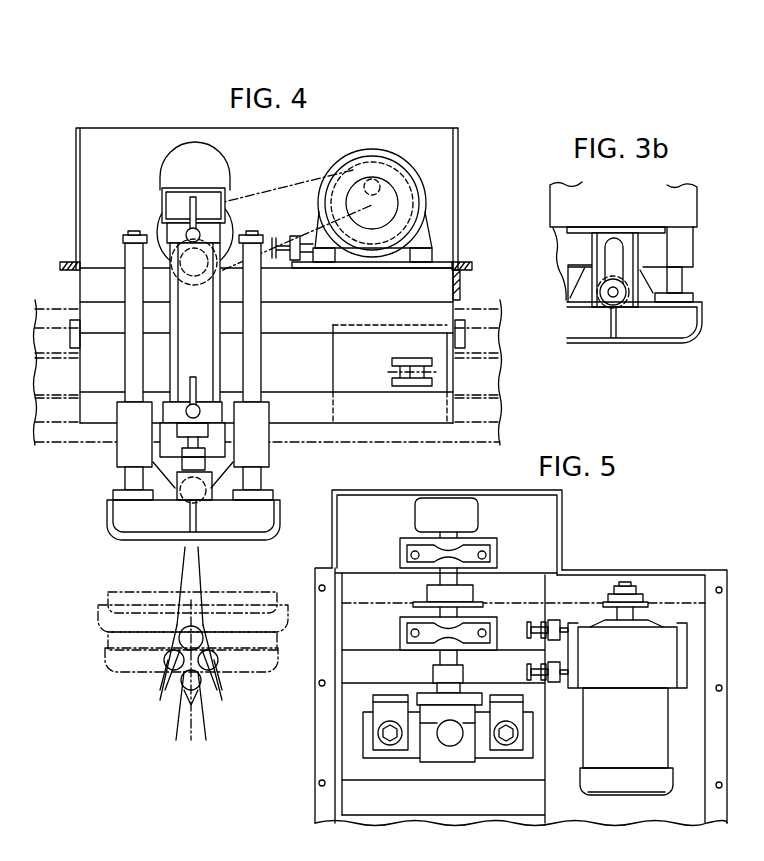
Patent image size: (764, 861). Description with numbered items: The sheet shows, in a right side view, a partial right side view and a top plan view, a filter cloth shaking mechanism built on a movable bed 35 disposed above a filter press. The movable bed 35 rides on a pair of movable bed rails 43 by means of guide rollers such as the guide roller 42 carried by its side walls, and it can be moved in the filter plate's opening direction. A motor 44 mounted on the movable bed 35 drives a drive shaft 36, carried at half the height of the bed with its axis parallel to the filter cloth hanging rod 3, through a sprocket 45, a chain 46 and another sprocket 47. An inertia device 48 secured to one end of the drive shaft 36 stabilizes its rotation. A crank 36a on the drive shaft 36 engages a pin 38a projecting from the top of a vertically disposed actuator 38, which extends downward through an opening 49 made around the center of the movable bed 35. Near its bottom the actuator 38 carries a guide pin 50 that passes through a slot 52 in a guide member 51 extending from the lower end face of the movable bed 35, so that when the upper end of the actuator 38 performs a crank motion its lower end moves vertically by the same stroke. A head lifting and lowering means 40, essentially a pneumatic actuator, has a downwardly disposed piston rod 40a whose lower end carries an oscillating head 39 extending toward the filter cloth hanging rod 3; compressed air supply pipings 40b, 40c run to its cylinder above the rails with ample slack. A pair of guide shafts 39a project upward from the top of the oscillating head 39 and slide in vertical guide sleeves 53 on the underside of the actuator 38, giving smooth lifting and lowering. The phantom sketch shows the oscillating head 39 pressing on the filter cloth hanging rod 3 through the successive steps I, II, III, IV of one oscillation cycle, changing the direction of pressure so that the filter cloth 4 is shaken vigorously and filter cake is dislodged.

In FIG. 4, the movable bed 35 is at (72, 163).
In FIG. 5, the movable bed 35 is at (316, 695).
In FIG. 5, the drive shaft 36 is at (497, 573).
In FIG. 4, the crank 36a is at (167, 212).
In FIG. 5, the crank 36a is at (459, 672).
In FIG. 4, the actuator 38 is at (222, 380).
In FIG. 3B, the actuator 38 is at (686, 258).
In FIG. 5, the actuator 38 is at (422, 693).
In FIG. 4, the pin 38a is at (218, 281).
In FIG. 4, the oscillating head 39 is at (108, 510).
In FIG. 3B, the oscillating head 39 is at (691, 336).
In FIG. 5, the oscillating head 39 is at (363, 730).
In FIG. 4, the guide shafts 39a is at (136, 350).
In FIG. 3B, the guide shafts 39a is at (677, 285).
In FIG. 4, the head lifting and lowering means 40 is at (205, 320).
In FIG. 4, the piston rod 40a is at (205, 450).
In FIG. 4, the compressed air supply piping 40b is at (200, 211).
In FIG. 4, the compressed air supply piping 40c is at (184, 390).
In FIG. 4, the guide roller 42 is at (405, 380).
In FIG. 4, the movable bed rails 43 is at (66, 303).
In FIG. 4, the motor 44 is at (422, 186).
In FIG. 5, the motor 44 is at (653, 729).
In FIG. 4, the sprocket 45 is at (397, 169).
In FIG. 5, the sprocket 45 is at (647, 600).
In FIG. 4, the chain 46 is at (276, 188).
In FIG. 5, the chain 46 is at (570, 603).
In FIG. 4, the sprocket 47 is at (158, 240).
In FIG. 5, the sprocket 47 is at (420, 598).
In FIG. 4, the inertia device 48 is at (168, 165).
In FIG. 5, the inertia device 48 is at (478, 514).
In FIG. 4, the opening 49 is at (97, 273).
In FIG. 5, the opening 49 is at (348, 760).
In FIG. 3B, the guide pin 50 is at (613, 307).
In FIG. 3B, the guide member 51 is at (592, 252).
In FIG. 3B, the slot 52 is at (607, 257).
In FIG. 4, the guide sleeves 53 is at (120, 450).
In FIG. 5, the guide sleeves 53 is at (395, 753).
In FIG. 4, the filter cloth hanging rod 3 is at (167, 660).
In FIG. 4, the filter cloth 4 is at (163, 720).
In FIG. 4, the oscillation step I is at (237, 592).
In FIG. 4, the oscillation step II is at (259, 596).
In FIG. 4, the oscillation step III is at (112, 663).
In FIG. 4, the oscillation step IV is at (103, 640).